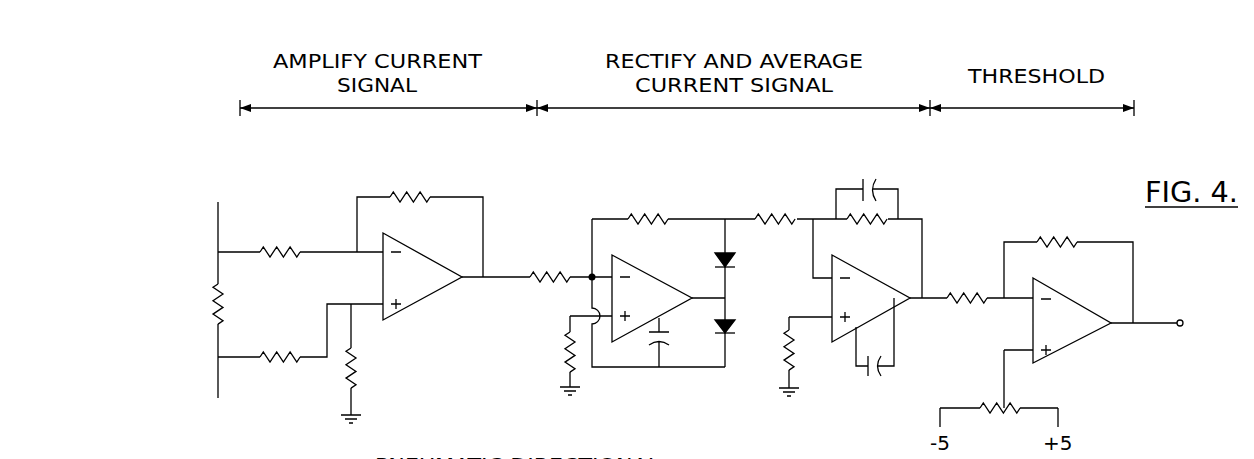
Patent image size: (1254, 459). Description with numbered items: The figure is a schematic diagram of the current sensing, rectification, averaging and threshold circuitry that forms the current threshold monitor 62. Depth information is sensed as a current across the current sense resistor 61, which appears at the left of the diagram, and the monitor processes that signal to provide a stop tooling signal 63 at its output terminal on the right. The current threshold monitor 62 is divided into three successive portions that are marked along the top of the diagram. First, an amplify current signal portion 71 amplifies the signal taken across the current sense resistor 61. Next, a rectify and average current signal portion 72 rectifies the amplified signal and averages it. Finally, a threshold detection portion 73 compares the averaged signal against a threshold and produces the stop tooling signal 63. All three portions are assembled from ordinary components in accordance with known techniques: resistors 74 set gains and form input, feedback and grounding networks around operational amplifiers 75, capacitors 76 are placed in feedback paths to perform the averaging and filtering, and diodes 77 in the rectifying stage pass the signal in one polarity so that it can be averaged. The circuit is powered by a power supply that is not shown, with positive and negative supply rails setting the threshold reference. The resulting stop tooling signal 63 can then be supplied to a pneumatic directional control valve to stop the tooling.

The current sense resistor 61 is at (214, 328).
The current threshold monitor 62 is at (240, 92).
The stop tooling signal 63 is at (1157, 320).
The amplify current signal portion 71 is at (478, 55).
The rectify and average current signal portion 72 is at (843, 45).
The threshold detection portion 73 is at (1092, 63).
The resistors 74 is at (281, 243).
The operational amplifiers 75 is at (412, 306).
The capacitors 76 is at (876, 185).
The diodes 77 is at (740, 258).